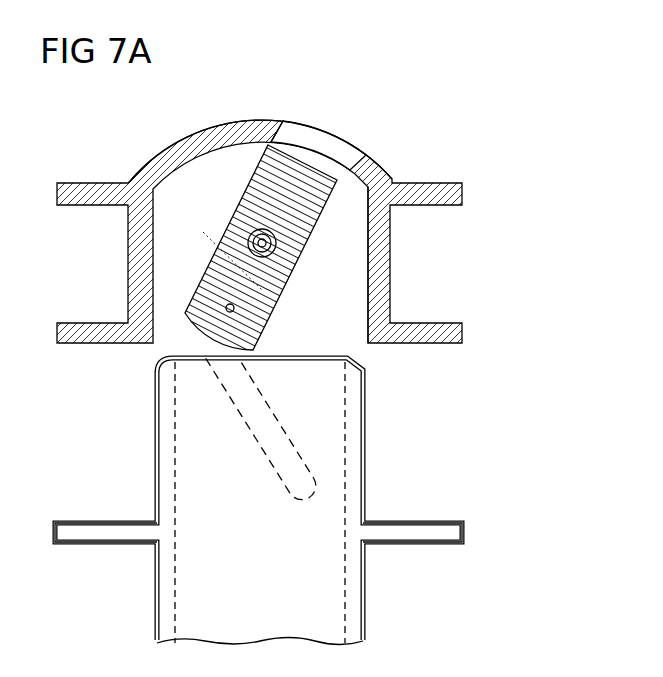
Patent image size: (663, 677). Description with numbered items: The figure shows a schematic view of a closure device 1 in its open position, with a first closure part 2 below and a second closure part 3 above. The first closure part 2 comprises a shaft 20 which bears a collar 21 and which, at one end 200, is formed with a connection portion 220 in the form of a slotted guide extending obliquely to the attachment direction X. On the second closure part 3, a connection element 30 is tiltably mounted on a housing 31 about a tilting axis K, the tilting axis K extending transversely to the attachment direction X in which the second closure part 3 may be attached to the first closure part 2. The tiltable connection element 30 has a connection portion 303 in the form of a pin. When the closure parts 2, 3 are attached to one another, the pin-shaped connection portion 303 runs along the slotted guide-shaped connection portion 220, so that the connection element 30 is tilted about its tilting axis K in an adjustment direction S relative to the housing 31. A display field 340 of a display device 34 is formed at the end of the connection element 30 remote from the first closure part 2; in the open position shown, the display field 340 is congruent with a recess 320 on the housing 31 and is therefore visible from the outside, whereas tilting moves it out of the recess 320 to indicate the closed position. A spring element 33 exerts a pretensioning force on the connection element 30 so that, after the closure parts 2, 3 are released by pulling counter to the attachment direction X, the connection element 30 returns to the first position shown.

The closure device 1 is at (422, 88).
The first closure part 2 is at (461, 494).
The second closure part 3 is at (460, 291).
The shaft 20 is at (364, 608).
The collar 21 is at (428, 533).
The connection element 30 is at (367, 162).
The housing 31 is at (392, 245).
The spring element 33 is at (250, 207).
The display device 34 is at (324, 100).
The end 200 is at (352, 356).
The connection portion 220 is at (253, 425).
The connection portion 303 is at (226, 311).
The recess 320 is at (282, 120).
The display field 340 is at (322, 140).
The tilting axis K is at (238, 238).
The adjustment direction S is at (309, 273).
The attachment direction X is at (308, 302).